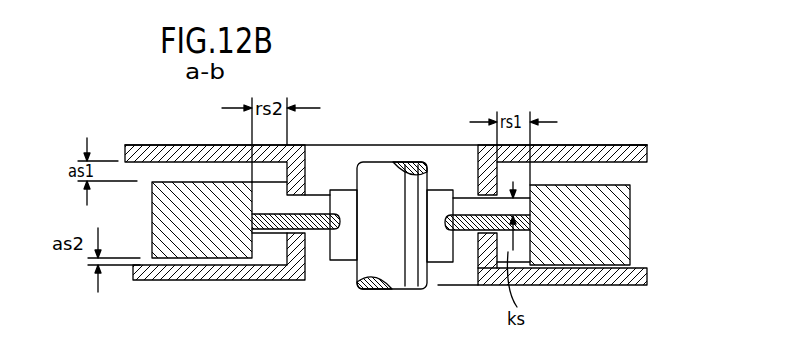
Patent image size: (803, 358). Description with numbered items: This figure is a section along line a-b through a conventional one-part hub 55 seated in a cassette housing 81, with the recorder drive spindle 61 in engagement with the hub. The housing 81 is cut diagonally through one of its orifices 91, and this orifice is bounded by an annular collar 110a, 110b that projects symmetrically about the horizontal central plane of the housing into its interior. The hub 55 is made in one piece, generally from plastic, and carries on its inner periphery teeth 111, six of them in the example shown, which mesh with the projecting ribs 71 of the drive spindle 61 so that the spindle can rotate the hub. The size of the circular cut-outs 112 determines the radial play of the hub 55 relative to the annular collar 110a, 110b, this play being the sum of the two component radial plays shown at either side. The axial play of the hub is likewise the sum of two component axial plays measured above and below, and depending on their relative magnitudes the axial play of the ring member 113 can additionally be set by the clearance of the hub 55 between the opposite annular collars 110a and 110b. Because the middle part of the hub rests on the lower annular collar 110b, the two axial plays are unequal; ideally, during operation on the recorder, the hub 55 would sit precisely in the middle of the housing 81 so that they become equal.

The hub 55 is at (648, 183).
The recorder drive spindle 61 is at (371, 160).
The projecting ribs 71 is at (438, 190).
The cassette housing 81 is at (617, 150).
The orifice 91 is at (318, 152).
The annular collar 110a is at (478, 188).
The annular collar 110b is at (480, 268).
The teeth 111 is at (338, 191).
The circular cut-outs 112 is at (280, 231).
The ring member 113 is at (584, 185).